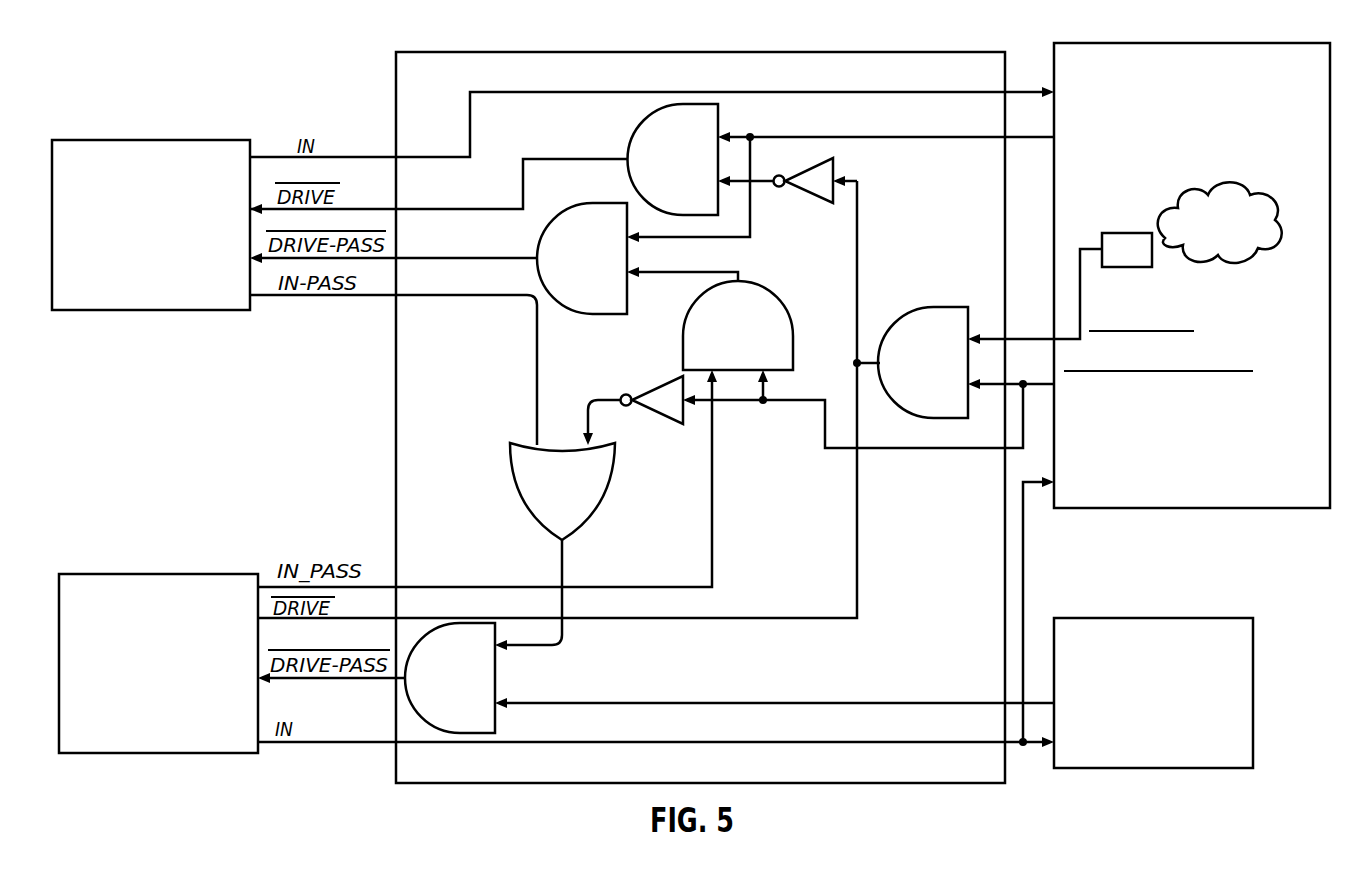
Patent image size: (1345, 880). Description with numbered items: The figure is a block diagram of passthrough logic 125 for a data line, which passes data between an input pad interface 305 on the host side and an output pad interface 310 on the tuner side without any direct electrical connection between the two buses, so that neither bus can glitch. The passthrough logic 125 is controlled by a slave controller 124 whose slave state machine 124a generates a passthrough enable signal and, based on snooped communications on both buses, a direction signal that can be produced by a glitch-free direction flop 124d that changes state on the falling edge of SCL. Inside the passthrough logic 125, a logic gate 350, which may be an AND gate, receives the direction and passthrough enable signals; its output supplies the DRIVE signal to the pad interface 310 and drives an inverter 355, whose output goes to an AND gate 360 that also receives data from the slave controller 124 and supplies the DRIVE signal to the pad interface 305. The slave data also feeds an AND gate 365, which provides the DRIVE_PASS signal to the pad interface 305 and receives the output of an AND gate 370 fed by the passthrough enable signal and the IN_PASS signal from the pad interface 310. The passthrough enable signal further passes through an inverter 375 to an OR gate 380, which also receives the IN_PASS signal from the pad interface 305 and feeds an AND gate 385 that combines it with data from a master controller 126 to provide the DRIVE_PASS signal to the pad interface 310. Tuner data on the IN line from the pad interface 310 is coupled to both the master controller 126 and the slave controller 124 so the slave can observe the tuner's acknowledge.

The input pad interface 305 is at (155, 140).
The output pad interface 310 is at (160, 574).
The passthrough logic 125 is at (971, 52).
The slave controller 124 is at (1193, 43).
The slave state machine 124a is at (1226, 183).
The direction flop 124d is at (1137, 233).
The master controller 126 is at (1253, 690).
The logic gate 350 is at (947, 307).
The inverter 355 is at (806, 195).
The AND gate 360 is at (639, 127).
The AND gate 365 is at (610, 203).
The AND gate 370 is at (771, 291).
The inverter 375 is at (654, 386).
The OR gate 380 is at (587, 523).
The AND gate 385 is at (497, 668).